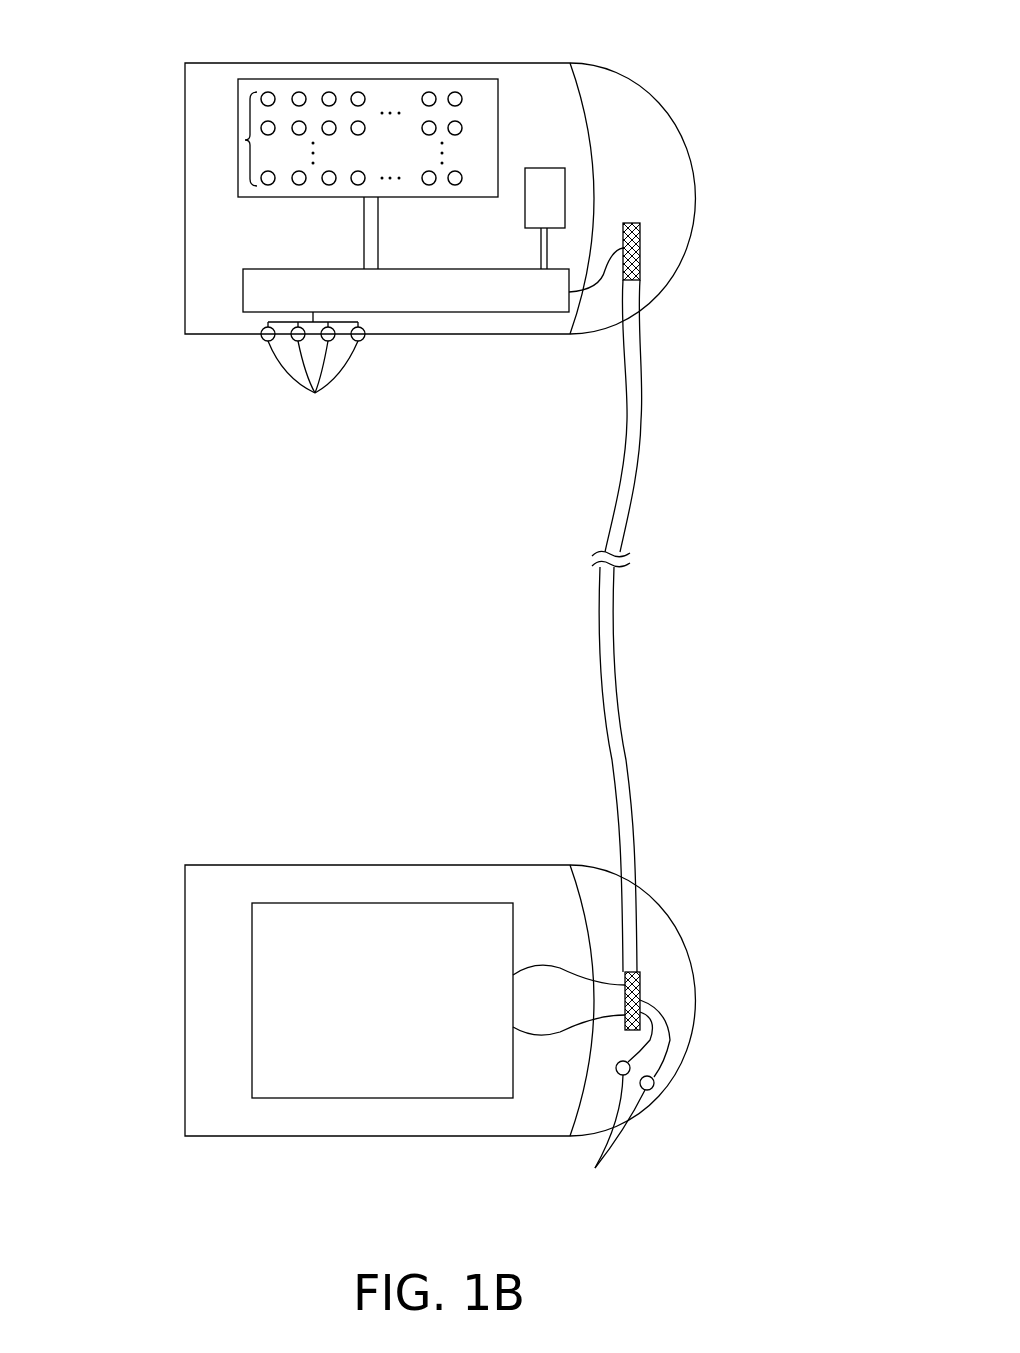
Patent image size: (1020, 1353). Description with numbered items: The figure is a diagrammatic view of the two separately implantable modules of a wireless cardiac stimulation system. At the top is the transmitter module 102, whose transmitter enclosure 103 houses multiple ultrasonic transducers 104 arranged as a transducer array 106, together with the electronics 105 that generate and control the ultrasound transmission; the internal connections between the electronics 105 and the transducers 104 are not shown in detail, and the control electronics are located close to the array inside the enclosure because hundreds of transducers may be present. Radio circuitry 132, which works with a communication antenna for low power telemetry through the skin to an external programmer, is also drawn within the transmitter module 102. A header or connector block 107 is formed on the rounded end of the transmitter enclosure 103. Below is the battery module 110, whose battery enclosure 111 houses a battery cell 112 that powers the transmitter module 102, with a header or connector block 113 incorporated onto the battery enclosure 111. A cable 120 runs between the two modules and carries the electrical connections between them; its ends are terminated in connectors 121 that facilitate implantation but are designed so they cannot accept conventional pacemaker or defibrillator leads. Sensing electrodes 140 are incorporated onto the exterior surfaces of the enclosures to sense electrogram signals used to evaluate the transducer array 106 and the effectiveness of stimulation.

The transmitter module 102 is at (162, 80).
The transmitter enclosure 103 is at (482, 63).
The ultrasonic transducers 104 is at (328, 92).
The electronics 105 is at (477, 312).
The transducer array 106 is at (238, 140).
The header or connector block 107 is at (653, 110).
The battery module 110 is at (718, 908).
The battery enclosure 111 is at (417, 1136).
The battery cell 112 is at (252, 1072).
The header or connector block 113 is at (677, 975).
The cable 120 is at (632, 468).
The connectors 121 is at (640, 237).
The radio circuitry 132 is at (560, 178).
The sensing electrodes 140 is at (465, 757).